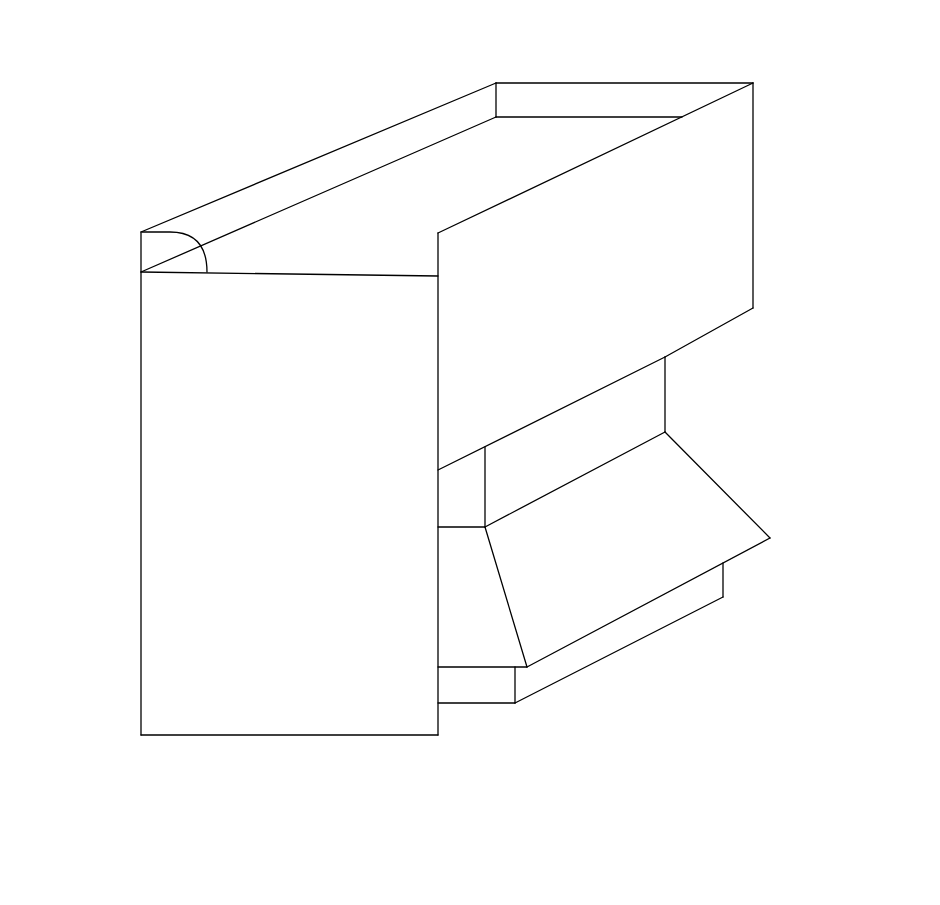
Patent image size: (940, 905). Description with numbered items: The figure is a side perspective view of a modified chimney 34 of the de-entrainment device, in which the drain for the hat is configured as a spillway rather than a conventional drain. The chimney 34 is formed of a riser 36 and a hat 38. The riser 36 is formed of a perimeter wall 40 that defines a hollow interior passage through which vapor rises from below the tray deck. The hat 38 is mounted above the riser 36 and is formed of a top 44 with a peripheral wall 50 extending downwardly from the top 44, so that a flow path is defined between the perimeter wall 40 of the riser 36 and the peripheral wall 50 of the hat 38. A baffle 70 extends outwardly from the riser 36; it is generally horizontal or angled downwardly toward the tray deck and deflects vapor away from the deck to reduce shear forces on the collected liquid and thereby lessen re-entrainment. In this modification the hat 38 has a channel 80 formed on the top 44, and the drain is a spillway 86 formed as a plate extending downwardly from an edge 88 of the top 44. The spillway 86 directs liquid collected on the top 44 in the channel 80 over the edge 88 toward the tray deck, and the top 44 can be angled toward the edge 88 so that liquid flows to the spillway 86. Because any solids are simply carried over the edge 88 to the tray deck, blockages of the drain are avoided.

The chimney 34 is at (832, 163).
The riser 36 is at (743, 457).
The hat 38 is at (728, 55).
The perimeter wall 40 is at (650, 398).
The top 44 is at (402, 172).
The peripheral wall 50 is at (737, 258).
The baffle 70 is at (633, 548).
The channel 80 is at (528, 170).
The spillway 86 is at (207, 373).
The edge 88 is at (142, 232).